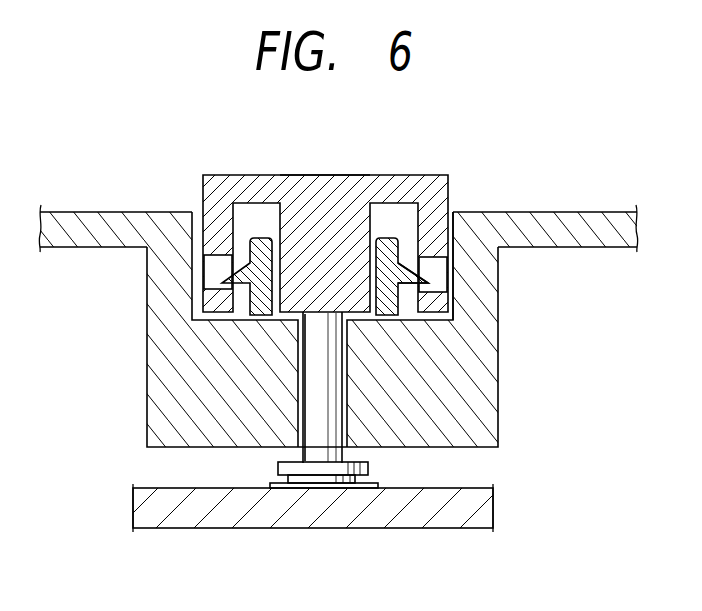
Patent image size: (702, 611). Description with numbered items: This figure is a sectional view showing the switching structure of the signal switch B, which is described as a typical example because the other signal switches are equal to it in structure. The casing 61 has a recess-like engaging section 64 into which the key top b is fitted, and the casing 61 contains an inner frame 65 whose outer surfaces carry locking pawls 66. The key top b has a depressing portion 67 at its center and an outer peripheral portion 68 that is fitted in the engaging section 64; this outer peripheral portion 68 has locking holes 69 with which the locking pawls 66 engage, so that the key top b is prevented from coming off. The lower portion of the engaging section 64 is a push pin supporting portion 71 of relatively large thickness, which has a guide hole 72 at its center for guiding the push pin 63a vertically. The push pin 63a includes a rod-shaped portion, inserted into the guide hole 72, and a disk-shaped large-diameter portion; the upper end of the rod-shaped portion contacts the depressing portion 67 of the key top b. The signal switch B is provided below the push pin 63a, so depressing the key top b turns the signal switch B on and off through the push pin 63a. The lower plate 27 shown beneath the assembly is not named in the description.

The casing 61 is at (568, 222).
The push pin supporting portion 71 is at (157, 390).
The engaging section 64 is at (453, 213).
The outer peripheral portion 68 is at (204, 203).
The depressing portion 67 is at (306, 238).
The key top b is at (320, 188).
The locking holes 69 is at (216, 267).
The inner frame 65 is at (382, 240).
The locking pawls 66 is at (428, 272).
The push pin 63a is at (322, 412).
The guide hole 72 is at (305, 450).
The signal switch B is at (323, 489).
The base plate 27 is at (447, 515).